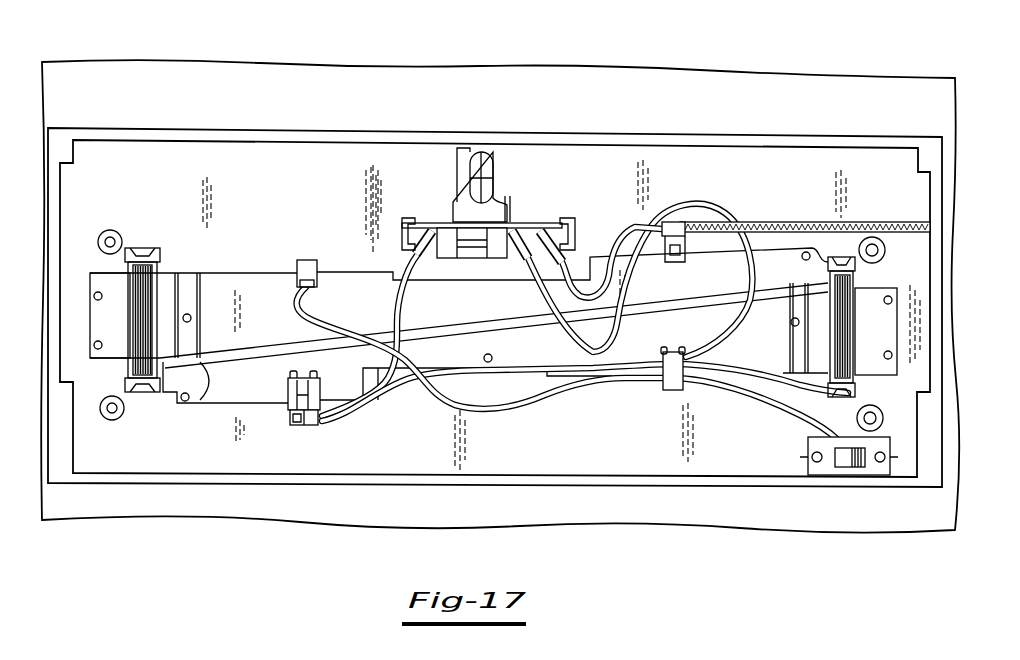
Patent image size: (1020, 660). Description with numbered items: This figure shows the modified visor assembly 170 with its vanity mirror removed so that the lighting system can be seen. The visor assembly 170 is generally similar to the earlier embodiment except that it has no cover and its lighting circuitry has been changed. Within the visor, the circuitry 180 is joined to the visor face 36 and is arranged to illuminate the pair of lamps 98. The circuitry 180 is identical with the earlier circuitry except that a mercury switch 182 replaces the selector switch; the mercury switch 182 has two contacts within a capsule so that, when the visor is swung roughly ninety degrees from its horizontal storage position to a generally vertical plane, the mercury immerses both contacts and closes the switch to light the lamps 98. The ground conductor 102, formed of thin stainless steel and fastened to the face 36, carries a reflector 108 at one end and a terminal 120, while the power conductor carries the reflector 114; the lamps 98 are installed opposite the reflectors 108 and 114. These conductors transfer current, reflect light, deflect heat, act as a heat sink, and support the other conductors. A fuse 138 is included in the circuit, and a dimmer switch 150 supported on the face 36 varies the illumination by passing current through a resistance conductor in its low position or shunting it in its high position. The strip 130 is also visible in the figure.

The visor assembly 170 is at (692, 18).
The face 36 is at (300, 165).
The reflector 108 is at (470, 339).
The lamps 98 is at (150, 347).
The ground conductor 102 is at (346, 266).
The fuse 138 is at (470, 252).
The mercury switch 182 is at (488, 208).
The circuitry 180 is at (738, 214).
The strip 130 is at (840, 222).
The terminal 120 is at (722, 244).
The reflector 114 is at (856, 268).
The dimmer switch 150 is at (840, 462).